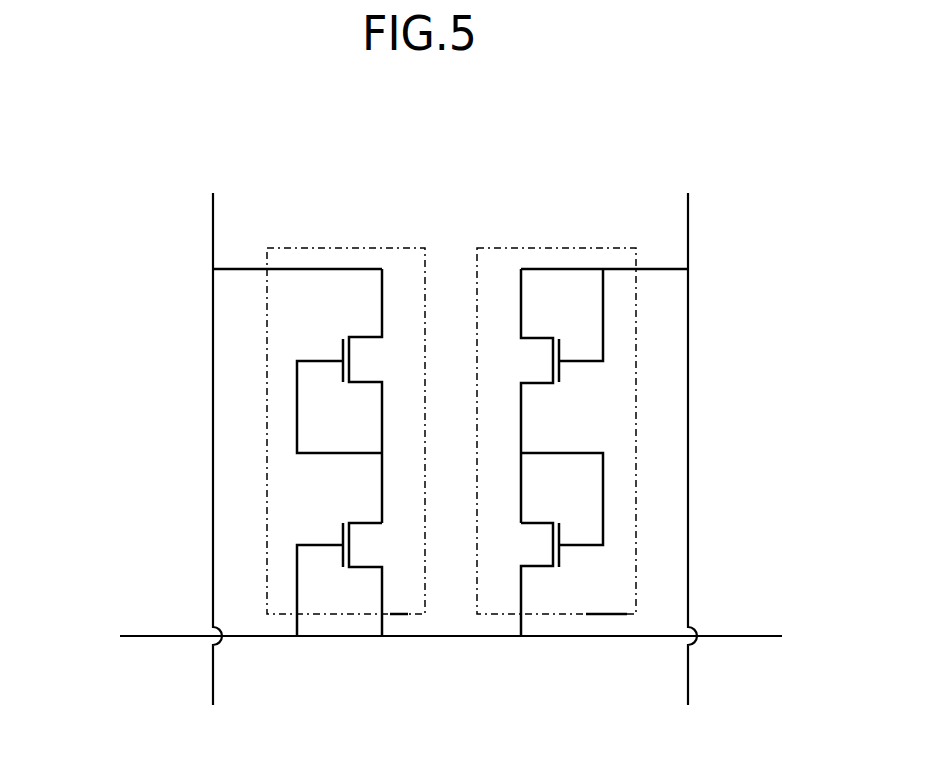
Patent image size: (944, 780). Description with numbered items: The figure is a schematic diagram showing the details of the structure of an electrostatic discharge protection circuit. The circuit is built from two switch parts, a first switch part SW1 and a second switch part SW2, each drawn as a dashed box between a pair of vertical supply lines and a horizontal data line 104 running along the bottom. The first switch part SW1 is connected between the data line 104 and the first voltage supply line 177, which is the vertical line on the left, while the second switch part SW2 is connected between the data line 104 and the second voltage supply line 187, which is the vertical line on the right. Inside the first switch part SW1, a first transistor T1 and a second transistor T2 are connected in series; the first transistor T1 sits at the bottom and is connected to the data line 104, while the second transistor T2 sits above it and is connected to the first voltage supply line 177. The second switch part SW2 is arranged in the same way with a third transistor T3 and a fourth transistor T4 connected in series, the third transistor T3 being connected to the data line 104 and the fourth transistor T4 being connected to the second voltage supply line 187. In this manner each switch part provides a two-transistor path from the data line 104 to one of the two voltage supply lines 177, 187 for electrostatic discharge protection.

The first voltage supply line 177 is at (212, 220).
The second voltage supply line 187 is at (690, 219).
The data line 104 is at (132, 637).
The first switch part SW1 is at (350, 246).
The second switch part SW2 is at (555, 246).
The first transistor T1 is at (352, 579).
The second transistor T2 is at (339, 396).
The third transistor T3 is at (574, 544).
The fourth transistor T4 is at (562, 396).